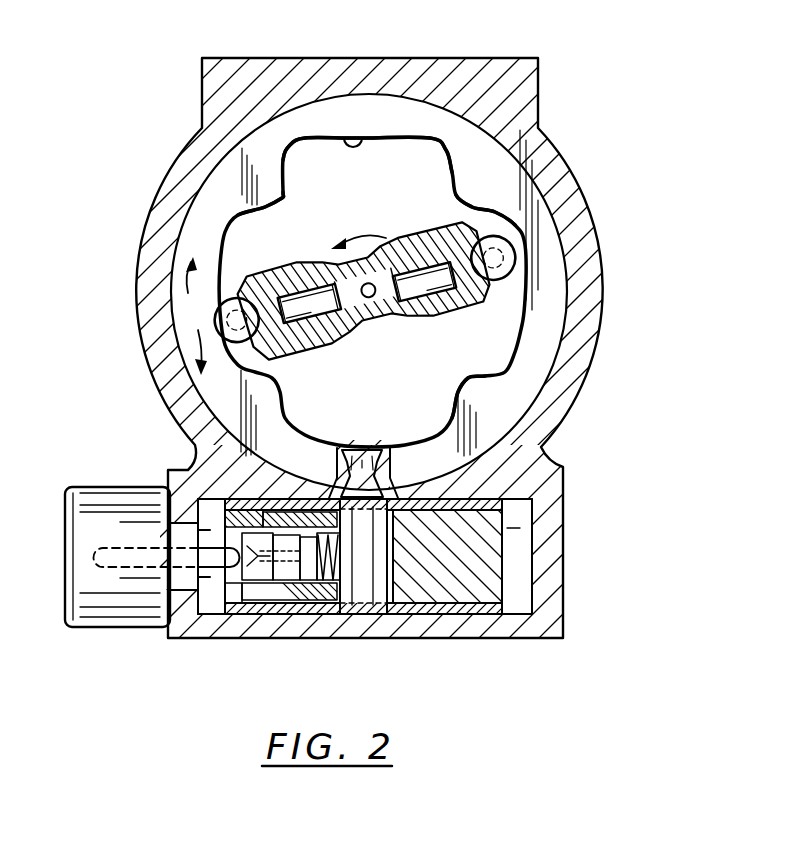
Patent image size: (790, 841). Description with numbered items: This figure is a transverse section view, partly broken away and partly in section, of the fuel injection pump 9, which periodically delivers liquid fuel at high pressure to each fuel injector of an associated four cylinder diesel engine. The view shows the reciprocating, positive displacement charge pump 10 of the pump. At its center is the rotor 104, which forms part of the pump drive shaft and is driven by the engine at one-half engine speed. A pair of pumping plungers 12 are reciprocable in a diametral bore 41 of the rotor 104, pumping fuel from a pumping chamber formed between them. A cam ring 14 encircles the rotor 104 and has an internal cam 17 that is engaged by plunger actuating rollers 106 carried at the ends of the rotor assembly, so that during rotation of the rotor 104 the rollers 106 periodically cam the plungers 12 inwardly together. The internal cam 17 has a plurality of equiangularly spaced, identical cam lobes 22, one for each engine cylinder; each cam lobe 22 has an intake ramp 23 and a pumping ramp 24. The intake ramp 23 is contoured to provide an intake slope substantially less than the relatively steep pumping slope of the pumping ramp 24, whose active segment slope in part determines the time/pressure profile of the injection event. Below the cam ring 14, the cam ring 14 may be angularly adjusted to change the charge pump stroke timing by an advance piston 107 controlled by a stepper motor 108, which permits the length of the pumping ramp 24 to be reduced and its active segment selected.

The fuel injection pump 9 is at (395, 420).
The charge pump 10 is at (555, 192).
The pumping plungers 12 is at (305, 300).
The cam ring 14 is at (490, 174).
The internal cam 17 is at (351, 141).
The cam lobes 22 is at (285, 203).
The intake ramp 23 is at (445, 173).
The pumping ramp 24 is at (492, 208).
The diametral bore 41 is at (353, 307).
The rotor 104 is at (330, 338).
The plunger actuating rollers 106 is at (237, 313).
The advance piston 107 is at (459, 568).
The stepper motor 108 is at (95, 627).